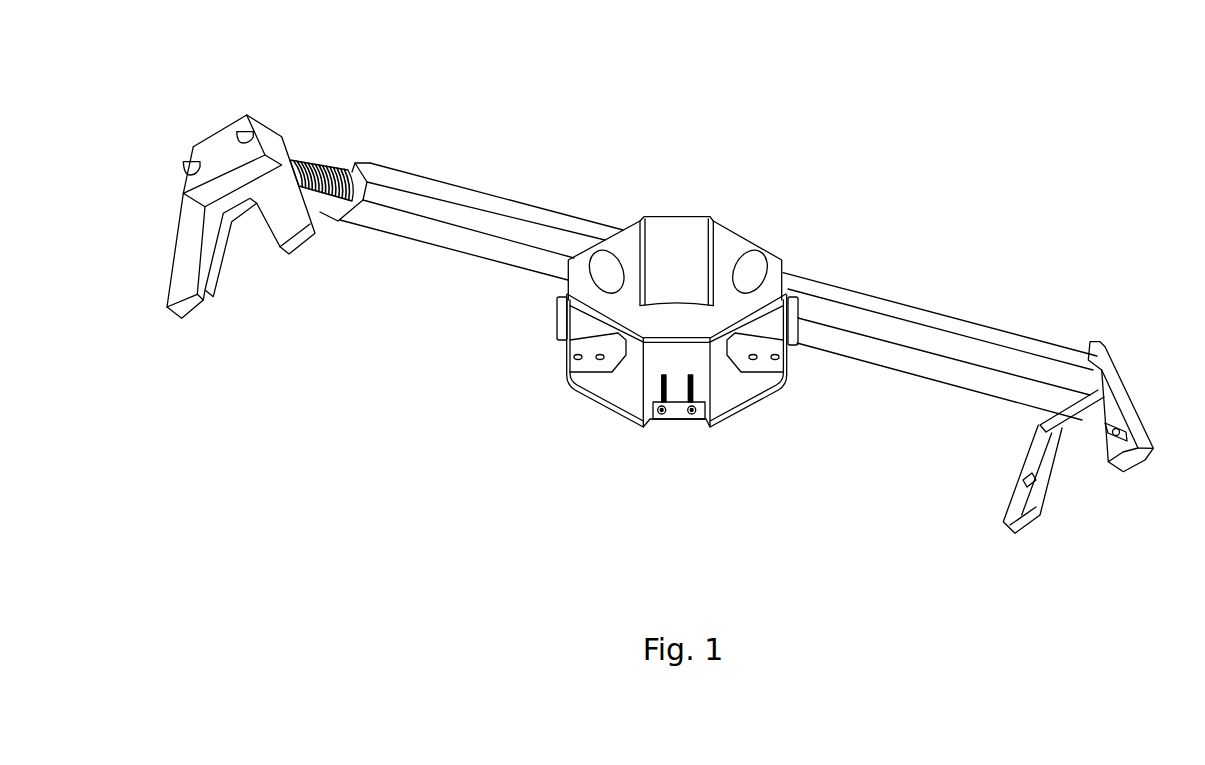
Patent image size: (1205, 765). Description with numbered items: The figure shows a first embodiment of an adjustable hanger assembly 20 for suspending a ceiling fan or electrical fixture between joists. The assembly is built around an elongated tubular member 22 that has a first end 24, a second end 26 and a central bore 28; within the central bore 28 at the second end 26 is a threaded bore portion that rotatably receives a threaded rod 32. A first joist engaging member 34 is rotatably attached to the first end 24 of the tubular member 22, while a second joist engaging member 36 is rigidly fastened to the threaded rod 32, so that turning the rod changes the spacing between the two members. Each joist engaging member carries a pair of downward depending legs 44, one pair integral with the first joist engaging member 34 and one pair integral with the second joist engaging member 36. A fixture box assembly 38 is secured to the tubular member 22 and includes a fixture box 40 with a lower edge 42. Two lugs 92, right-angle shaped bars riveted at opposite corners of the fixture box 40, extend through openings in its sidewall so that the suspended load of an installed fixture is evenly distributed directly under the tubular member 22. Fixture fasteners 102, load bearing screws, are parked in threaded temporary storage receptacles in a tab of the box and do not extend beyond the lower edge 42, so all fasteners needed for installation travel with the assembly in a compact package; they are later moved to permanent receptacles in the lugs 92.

The adjustable hanger assembly 20 is at (843, 139).
The elongated tubular member 22 is at (932, 318).
The first end 24 is at (1092, 340).
The second end 26 is at (358, 162).
The central bore 28 is at (358, 164).
The threaded rod 32 is at (316, 166).
The first joist engaging member 34 is at (1108, 343).
The second joist engaging member 36 is at (258, 120).
The fixture box assembly 38 is at (562, 423).
The fixture box 40 is at (688, 262).
The lower edge 42 is at (746, 428).
The downward depending legs 44 is at (220, 278).
The lugs 92 is at (562, 366).
The fixture fasteners 102 is at (662, 413).